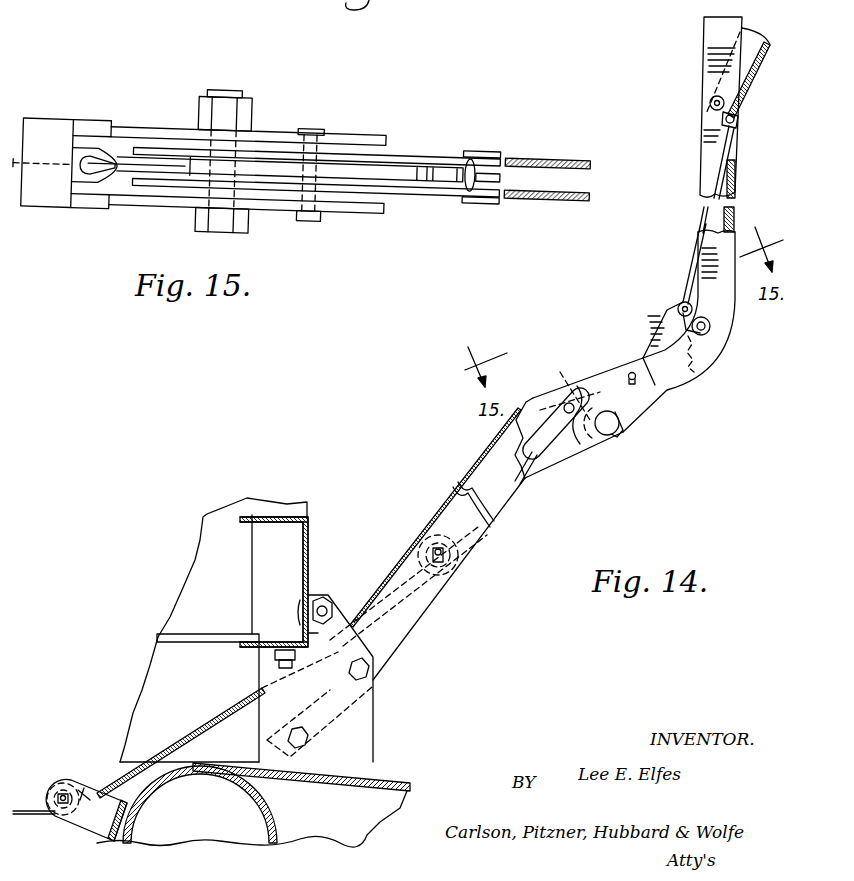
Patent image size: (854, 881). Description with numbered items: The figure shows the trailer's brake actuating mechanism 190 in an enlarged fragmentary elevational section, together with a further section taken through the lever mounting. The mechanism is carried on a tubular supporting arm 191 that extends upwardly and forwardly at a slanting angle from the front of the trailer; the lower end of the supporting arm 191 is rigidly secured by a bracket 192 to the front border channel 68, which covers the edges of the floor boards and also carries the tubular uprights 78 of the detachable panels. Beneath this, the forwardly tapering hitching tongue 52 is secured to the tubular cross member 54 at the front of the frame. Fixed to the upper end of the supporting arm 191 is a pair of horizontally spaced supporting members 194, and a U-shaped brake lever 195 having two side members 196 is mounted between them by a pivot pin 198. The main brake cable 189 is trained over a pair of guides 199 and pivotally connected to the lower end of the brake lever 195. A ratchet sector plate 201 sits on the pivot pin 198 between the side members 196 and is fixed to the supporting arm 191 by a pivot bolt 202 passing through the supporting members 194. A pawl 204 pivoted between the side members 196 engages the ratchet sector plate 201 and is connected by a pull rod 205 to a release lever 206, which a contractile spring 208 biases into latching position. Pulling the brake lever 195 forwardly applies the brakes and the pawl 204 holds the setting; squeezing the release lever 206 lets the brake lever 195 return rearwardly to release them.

In FIG. 14, the hitching tongue 52 is at (393, 788).
In FIG. 14, the cross member 54 is at (272, 824).
In FIG. 14, the border channel 68 is at (305, 563).
In FIG. 14, the upright 78 is at (290, 508).
In FIG. 15, the main brake cable 189 is at (22, 146).
In FIG. 14, the main brake cable 189 is at (218, 713).
In FIG. 14, the actuating mechanism 190 is at (597, 368).
In FIG. 15, the tubular supporting arm 191 is at (55, 197).
In FIG. 14, the tubular supporting arm 191 is at (432, 595).
In FIG. 14, the bracket 192 is at (370, 734).
In FIG. 15, the supporting members 194 is at (378, 138).
In FIG. 14, the brake lever 195 is at (697, 88).
In FIG. 15, the side members 196 is at (538, 161).
In FIG. 15, the pivot pin 198 is at (305, 130).
In FIG. 14, the guides 199 is at (428, 553).
In FIG. 15, the ratchet sector plate 201 is at (396, 180).
In FIG. 14, the ratchet sector plate 201 is at (677, 381).
In FIG. 15, the pivot bolt 202 is at (199, 229).
In FIG. 14, the pivot bolt 202 is at (611, 431).
In FIG. 15, the pawl 204 is at (446, 181).
In FIG. 14, the pawl 204 is at (680, 304).
In FIG. 14, the pull rod 205 is at (690, 272).
In FIG. 14, the release lever 206 is at (752, 77).
In FIG. 14, the contractile spring 208 is at (738, 192).